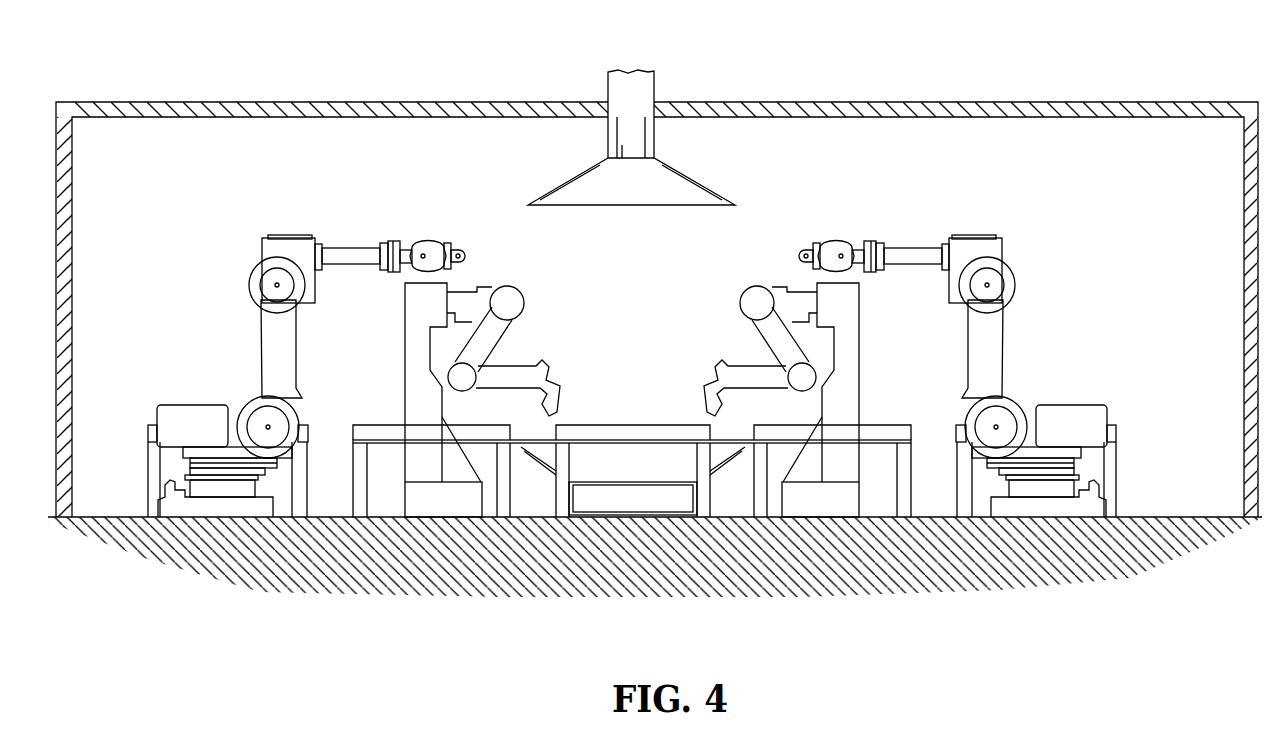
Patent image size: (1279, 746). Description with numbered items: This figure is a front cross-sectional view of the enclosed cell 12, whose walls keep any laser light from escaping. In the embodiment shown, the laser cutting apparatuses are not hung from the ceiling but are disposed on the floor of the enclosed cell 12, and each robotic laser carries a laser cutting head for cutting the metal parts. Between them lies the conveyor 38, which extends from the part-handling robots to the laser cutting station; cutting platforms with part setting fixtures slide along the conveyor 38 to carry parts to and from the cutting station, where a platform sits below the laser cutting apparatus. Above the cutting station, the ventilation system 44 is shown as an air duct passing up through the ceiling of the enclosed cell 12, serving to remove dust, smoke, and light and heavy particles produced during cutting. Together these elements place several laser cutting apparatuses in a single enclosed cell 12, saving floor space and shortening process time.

The enclosed cell 12 is at (825, 102).
The conveyor 38 is at (556, 496).
The ventilation system 44 is at (698, 182).